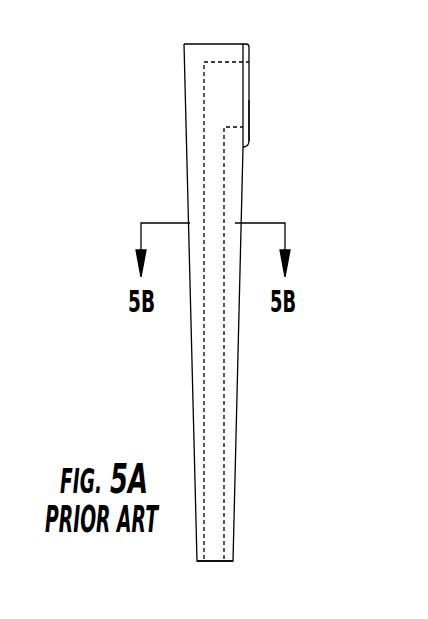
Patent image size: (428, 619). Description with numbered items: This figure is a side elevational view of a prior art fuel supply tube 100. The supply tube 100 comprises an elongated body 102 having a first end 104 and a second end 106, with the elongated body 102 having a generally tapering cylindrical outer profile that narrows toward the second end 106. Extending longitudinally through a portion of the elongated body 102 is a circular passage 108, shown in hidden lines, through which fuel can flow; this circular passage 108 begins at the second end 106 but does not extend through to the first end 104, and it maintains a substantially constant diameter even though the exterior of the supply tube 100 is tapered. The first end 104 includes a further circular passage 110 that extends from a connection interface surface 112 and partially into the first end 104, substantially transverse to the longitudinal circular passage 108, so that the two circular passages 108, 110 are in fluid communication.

The fuel supply tube 100 is at (147, 92).
The elongated body 102 is at (185, 185).
The first end 104 is at (218, 44).
The second end 106 is at (215, 561).
The circular passage 108 is at (212, 428).
The circular passage 110 is at (227, 101).
The connection interface surface 112 is at (250, 119).